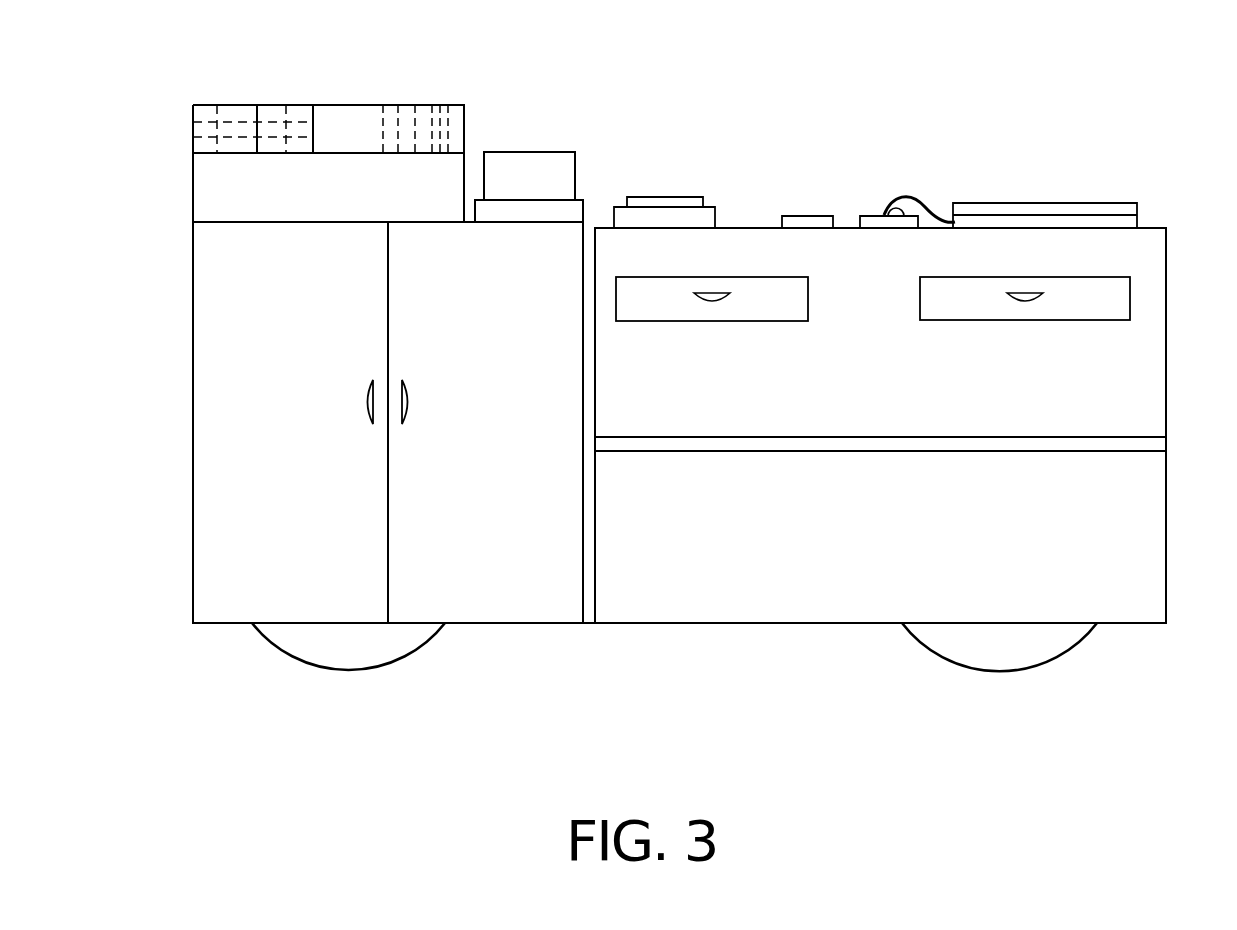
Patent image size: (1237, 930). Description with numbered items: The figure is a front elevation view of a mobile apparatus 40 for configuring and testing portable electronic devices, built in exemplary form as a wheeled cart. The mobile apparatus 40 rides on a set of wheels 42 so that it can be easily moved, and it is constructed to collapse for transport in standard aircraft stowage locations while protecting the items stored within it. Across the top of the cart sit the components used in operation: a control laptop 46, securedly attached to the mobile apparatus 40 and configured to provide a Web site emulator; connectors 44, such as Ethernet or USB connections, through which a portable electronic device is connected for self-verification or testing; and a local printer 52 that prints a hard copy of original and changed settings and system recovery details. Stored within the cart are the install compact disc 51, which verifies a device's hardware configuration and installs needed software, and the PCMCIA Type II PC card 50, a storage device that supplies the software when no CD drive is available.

The mobile apparatus 40 is at (1118, 112).
The wheels 42 is at (280, 650).
The connectors 44 is at (872, 216).
The control laptop 46 is at (527, 152).
The PCMCIA Type II PC card 50 is at (391, 115).
The install compact disc 51 is at (287, 110).
The local printer 52 is at (661, 197).